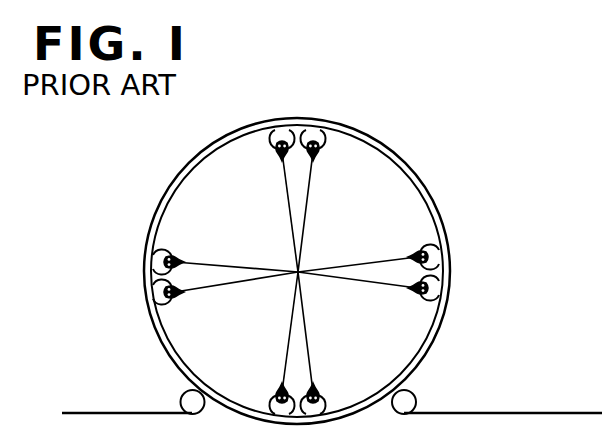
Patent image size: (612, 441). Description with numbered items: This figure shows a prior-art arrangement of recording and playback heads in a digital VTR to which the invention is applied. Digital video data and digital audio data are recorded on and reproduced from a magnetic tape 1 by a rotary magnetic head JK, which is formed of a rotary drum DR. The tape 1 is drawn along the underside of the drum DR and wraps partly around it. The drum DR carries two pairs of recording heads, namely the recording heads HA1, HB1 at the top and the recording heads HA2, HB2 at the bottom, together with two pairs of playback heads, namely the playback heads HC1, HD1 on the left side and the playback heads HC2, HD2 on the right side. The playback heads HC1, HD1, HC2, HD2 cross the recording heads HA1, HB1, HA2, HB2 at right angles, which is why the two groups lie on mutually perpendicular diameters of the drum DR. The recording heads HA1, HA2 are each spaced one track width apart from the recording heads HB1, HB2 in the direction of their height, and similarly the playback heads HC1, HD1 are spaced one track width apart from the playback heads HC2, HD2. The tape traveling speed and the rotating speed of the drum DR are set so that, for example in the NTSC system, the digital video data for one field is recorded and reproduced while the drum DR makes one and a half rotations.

The magnetic tape 1 is at (539, 413).
The rotary drum DR is at (409, 171).
The rotary magnetic head JK is at (532, 100).
The recording head HA1 is at (322, 146).
The recording head HA2 is at (272, 392).
The recording head HB1 is at (273, 146).
The recording head HB2 is at (322, 393).
The playback head HC1 is at (189, 259).
The playback head HC2 is at (419, 291).
The playback head HD1 is at (187, 294).
The playback head HD2 is at (413, 254).